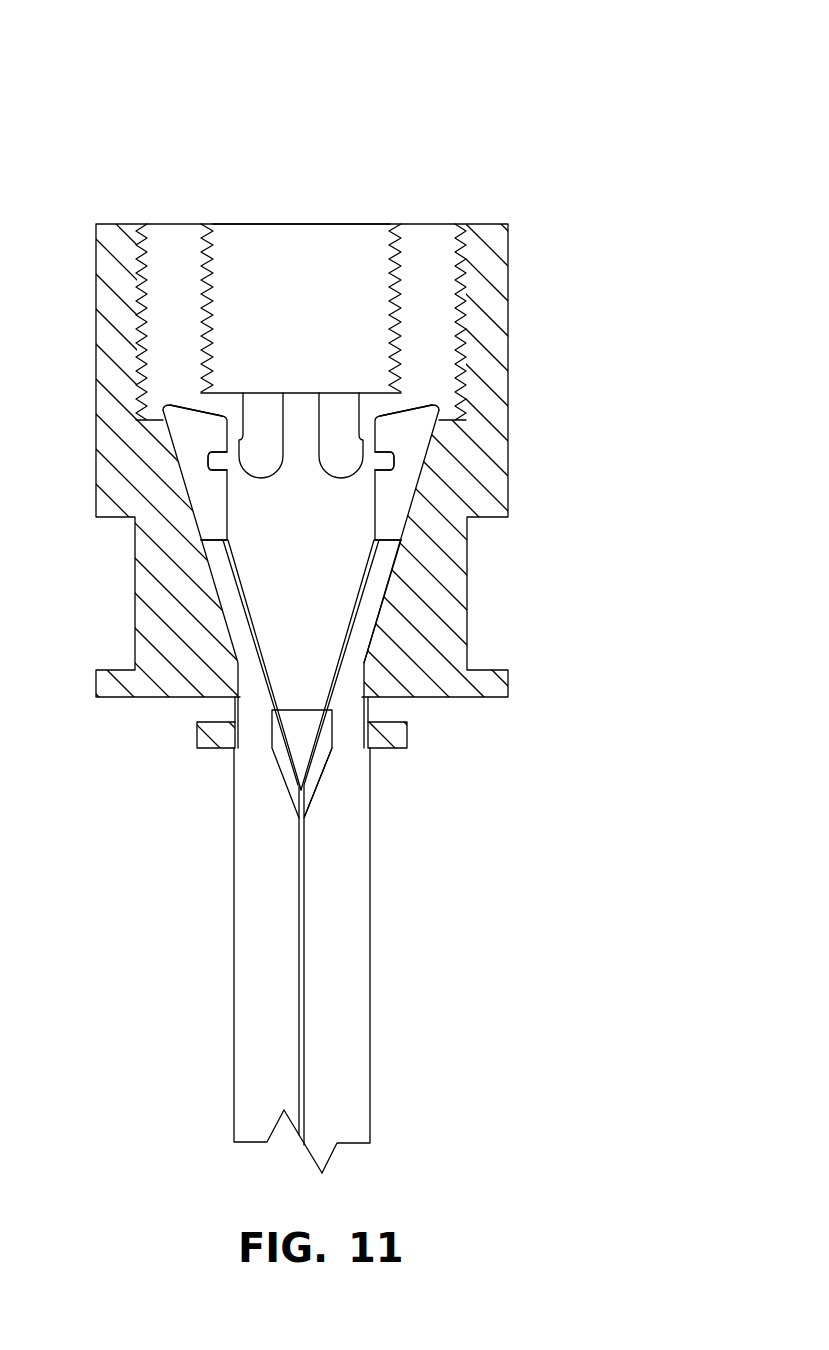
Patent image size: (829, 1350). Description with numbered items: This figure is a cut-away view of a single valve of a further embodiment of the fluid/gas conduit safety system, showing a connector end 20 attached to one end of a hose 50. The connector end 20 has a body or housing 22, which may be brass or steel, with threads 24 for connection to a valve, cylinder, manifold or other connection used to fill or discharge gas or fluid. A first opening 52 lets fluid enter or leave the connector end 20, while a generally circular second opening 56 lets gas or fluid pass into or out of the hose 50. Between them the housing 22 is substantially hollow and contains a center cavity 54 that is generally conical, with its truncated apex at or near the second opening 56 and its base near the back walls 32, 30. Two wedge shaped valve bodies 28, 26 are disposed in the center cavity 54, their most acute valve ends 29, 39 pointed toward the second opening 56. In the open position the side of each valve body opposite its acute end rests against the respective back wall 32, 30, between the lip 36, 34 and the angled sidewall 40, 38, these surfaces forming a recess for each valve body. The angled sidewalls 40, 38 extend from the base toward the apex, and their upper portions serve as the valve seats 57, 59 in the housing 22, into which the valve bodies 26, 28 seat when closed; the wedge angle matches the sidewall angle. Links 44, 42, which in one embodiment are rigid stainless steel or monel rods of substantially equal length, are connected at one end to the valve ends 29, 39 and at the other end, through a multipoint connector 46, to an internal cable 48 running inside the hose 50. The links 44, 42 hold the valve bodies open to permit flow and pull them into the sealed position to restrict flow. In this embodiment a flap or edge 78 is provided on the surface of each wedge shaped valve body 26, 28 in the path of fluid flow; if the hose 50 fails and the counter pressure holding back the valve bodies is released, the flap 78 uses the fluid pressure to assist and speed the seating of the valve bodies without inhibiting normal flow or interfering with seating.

The connector end 20 is at (100, 93).
The housing 22 is at (512, 229).
The threads 24 is at (407, 245).
The first opening 52 is at (296, 224).
The lip 36 is at (283, 393).
The lip 34 is at (319, 393).
The wedge shaped valve body 28 is at (163, 409).
The back wall 32 is at (200, 405).
The wedge shaped valve body 26 is at (440, 409).
The back wall 30 is at (362, 435).
The flap 78 is at (207, 452).
The angled sidewall 40 is at (176, 462).
The angled sidewall 38 is at (423, 468).
The valve end 29 is at (198, 540).
The valve end 39 is at (407, 543).
The link 44 is at (262, 680).
The center cavity 54 is at (305, 570).
The valve seat 59 is at (372, 665).
The valve seat 57 is at (238, 665).
The link 42 is at (375, 711).
The second opening 56 is at (347, 730).
The multipoint connector 46 is at (318, 783).
The internal cable 48 is at (299, 1050).
The hose 50 is at (371, 1050).